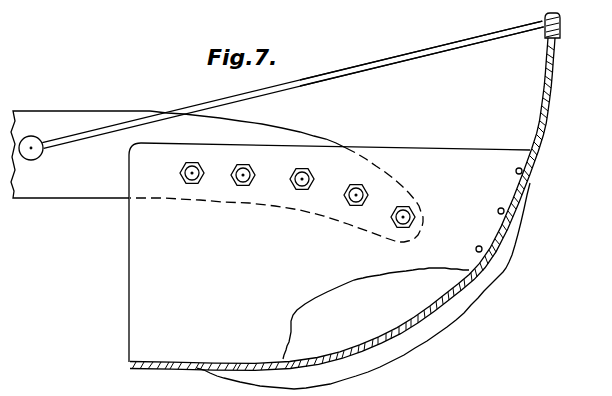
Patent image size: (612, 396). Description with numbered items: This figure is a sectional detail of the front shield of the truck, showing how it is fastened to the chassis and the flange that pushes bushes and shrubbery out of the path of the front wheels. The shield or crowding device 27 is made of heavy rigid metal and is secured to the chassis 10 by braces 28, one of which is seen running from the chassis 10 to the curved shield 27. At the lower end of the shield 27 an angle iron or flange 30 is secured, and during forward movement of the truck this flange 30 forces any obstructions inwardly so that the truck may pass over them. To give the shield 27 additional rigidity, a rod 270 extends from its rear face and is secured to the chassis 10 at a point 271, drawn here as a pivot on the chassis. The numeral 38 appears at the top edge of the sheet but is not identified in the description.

The ball pivot 271 is at (29, 144).
The lever rod 10 is at (108, 121).
The rod 270 is at (422, 61).
The mounting plate 28 is at (443, 158).
The curved guide strip 27 is at (543, 133).
The outer flange rim 30 is at (437, 330).
The upper element 38 is at (420, 4).